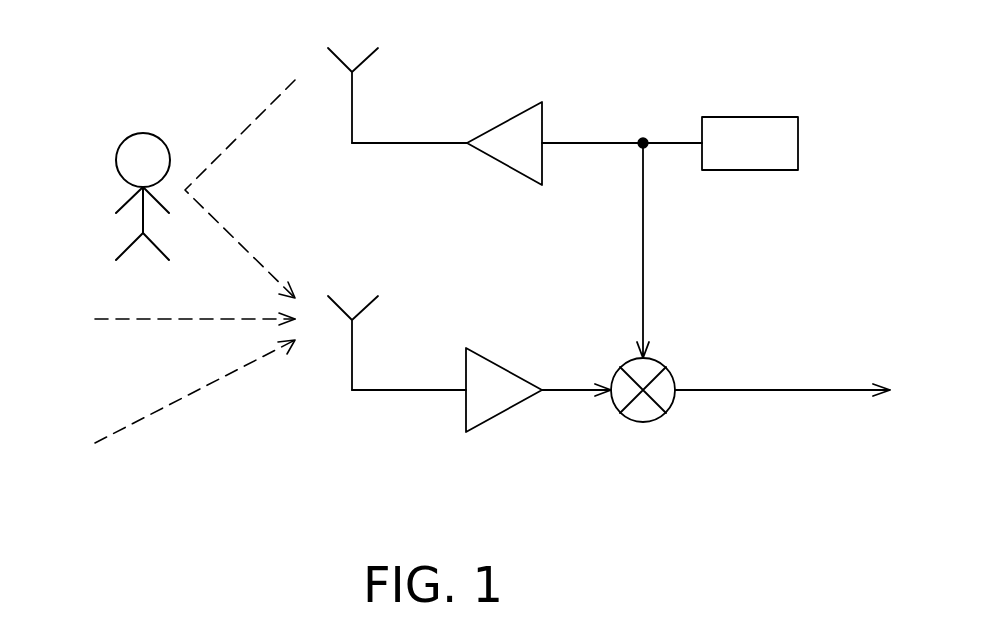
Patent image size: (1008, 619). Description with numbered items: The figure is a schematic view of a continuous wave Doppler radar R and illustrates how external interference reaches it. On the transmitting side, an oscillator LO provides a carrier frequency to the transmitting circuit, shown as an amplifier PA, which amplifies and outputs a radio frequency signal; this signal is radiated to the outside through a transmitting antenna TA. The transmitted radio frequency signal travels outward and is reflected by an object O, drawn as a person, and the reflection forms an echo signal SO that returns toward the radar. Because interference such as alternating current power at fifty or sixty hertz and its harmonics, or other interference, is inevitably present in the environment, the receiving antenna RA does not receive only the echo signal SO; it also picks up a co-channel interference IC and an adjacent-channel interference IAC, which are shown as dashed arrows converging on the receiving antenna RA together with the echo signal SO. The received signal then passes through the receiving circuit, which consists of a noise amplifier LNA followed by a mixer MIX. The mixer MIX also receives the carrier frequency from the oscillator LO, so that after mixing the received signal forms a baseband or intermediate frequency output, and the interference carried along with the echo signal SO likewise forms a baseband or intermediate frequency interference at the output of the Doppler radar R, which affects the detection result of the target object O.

The object O is at (138, 132).
The echo signal SO is at (262, 259).
The co-channel interference IC is at (108, 317).
The adjacent-channel interference IAC is at (135, 420).
The transmitting antenna TA is at (352, 93).
The amplifier PA is at (504, 143).
The oscillator LO is at (750, 143).
The receiving antenna RA is at (352, 341).
The noise amplifier LNA is at (504, 390).
The mixer MIX is at (642, 423).
The Doppler radar R is at (880, 466).